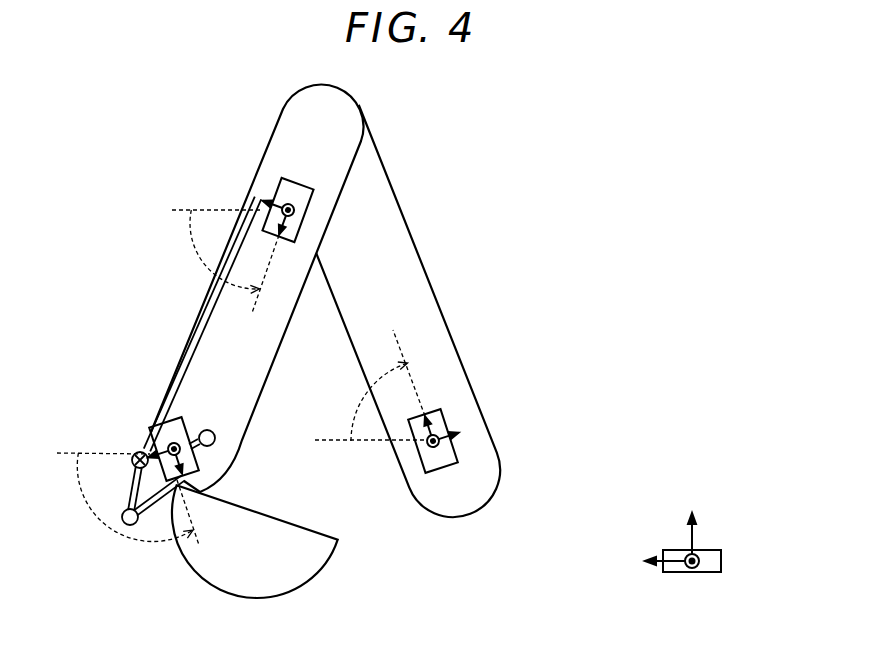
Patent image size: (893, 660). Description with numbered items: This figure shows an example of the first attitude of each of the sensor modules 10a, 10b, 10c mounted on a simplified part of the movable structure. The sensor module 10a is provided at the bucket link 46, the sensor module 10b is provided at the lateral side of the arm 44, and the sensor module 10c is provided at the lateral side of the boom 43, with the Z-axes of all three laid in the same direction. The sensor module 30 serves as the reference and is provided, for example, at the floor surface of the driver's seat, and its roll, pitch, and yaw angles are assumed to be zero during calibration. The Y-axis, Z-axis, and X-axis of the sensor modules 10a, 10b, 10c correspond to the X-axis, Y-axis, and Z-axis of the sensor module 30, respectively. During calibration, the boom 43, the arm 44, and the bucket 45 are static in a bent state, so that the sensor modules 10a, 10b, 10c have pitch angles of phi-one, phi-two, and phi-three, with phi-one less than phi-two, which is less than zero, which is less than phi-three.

The sensor module 10a is at (155, 432).
The sensor module 10b is at (287, 193).
The sensor module 10c is at (458, 457).
The sensor module 30 is at (721, 557).
The boom 43 is at (430, 302).
The arm 44 is at (213, 330).
The bucket 45 is at (297, 580).
The bucket link 46 is at (197, 451).